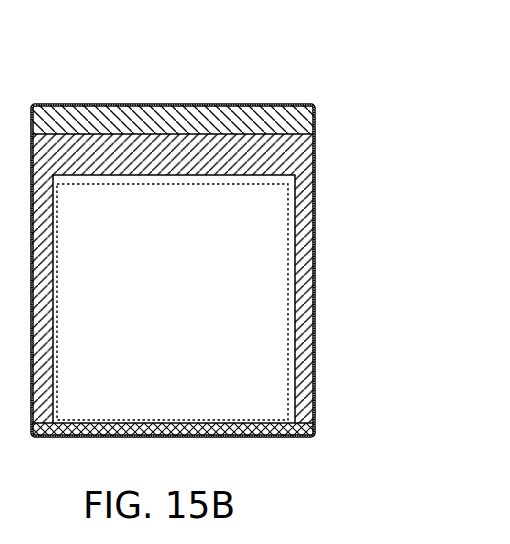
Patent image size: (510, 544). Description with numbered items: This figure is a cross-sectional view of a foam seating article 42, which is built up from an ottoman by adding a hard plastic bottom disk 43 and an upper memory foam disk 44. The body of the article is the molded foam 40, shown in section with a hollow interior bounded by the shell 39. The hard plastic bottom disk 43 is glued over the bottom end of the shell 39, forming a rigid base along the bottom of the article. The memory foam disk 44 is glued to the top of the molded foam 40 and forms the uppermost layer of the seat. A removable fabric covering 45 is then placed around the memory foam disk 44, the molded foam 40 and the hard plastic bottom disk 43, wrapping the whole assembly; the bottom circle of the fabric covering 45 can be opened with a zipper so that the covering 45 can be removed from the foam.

The foam seating article 42 is at (313, 91).
The upper memory foam disk 44 is at (316, 120).
The molded foam 40 is at (316, 155).
The removable fabric covering 45 is at (316, 190).
The hard plastic bottom disk 43 is at (316, 430).
The shell 39 is at (288, 282).